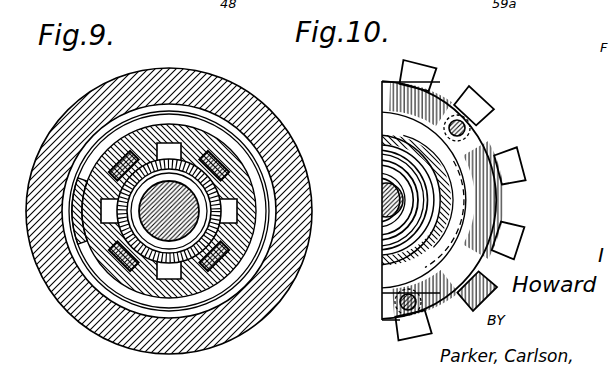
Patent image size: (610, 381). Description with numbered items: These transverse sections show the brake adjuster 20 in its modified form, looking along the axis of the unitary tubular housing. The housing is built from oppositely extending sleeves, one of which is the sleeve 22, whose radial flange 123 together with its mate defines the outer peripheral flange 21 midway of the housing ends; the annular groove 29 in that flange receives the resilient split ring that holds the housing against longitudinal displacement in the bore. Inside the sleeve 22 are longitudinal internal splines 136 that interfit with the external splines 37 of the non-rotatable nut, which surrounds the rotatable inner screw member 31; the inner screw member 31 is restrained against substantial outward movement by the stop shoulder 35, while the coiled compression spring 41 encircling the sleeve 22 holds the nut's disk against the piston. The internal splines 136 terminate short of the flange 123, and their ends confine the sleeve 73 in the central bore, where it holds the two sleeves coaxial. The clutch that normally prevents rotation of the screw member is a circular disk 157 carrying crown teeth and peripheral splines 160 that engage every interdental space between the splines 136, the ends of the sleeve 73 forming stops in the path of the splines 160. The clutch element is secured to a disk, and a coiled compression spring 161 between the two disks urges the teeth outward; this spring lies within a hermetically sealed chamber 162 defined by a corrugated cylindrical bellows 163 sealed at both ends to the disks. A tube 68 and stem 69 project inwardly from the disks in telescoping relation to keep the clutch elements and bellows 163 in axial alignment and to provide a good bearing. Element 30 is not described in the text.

In FIG. 9, the adjuster 20 is at (227, 167).
In FIG. 10, the adjuster 20 is at (445, 96).
In FIG. 10, the outer peripheral flange 21 is at (516, 154).
In FIG. 9, the sleeve 22 is at (205, 147).
In FIG. 10, the annular groove 29 is at (398, 328).
In FIG. 10, the tab 30 is at (515, 240).
In FIG. 9, the inner screw member 31 is at (96, 272).
In FIG. 9, the stop shoulder 35 is at (223, 158).
In FIG. 9, the external spline 37 is at (252, 225).
In FIG. 9, the coiled compression spring 41 is at (252, 170).
In FIG. 10, the tube 68 is at (383, 212).
In FIG. 10, the stem 69 is at (383, 197).
In FIG. 10, the sleeve 73 is at (387, 140).
In FIG. 10, the radial flange 123 is at (505, 175).
In FIG. 9, the longitudinal internal spline 136 is at (130, 162).
In FIG. 10, the circular disk 157 is at (432, 163).
In FIG. 10, the spline 160 is at (500, 212).
In FIG. 10, the coiled compression spring 161 is at (385, 225).
In FIG. 10, the hermetically sealed chamber 162 is at (383, 168).
In FIG. 10, the corrugated cylindrical bellows 163 is at (388, 155).